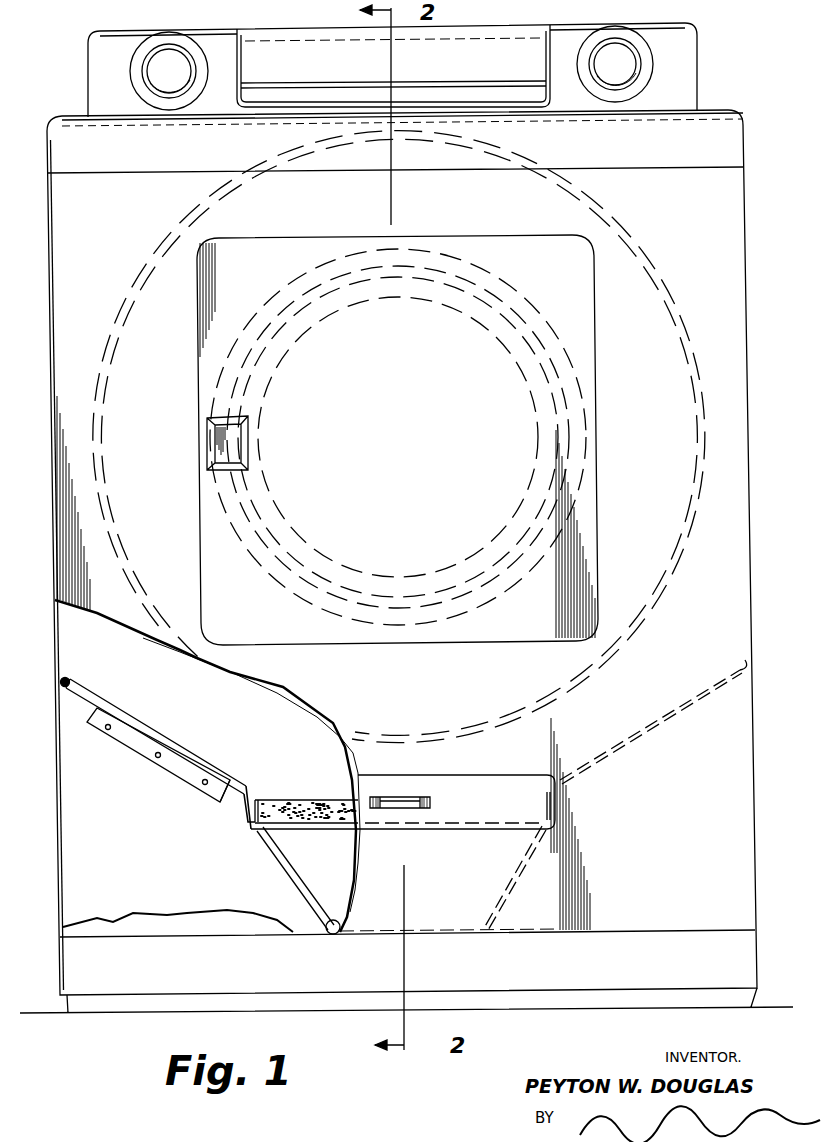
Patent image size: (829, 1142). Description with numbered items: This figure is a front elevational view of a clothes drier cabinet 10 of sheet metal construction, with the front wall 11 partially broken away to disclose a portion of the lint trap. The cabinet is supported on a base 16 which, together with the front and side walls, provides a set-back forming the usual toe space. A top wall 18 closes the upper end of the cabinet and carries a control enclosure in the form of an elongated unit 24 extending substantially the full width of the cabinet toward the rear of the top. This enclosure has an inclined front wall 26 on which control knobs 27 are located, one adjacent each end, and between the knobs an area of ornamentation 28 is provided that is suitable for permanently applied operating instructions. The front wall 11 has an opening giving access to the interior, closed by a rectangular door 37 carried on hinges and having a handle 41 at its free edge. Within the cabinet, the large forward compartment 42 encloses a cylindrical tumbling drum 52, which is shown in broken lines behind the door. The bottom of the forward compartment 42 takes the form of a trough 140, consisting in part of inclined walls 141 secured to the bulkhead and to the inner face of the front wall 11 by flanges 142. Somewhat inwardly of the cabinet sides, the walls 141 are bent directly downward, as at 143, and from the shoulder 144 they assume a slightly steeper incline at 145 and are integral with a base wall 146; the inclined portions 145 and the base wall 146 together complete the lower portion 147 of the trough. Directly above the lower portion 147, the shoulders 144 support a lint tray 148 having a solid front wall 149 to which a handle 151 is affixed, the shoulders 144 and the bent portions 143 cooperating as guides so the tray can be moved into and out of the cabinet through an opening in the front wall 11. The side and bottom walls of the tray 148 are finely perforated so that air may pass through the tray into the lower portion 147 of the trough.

The cabinet 10 is at (748, 431).
The front wall 11 is at (65, 385).
The base 16 is at (65, 1003).
The top wall 18 is at (67, 115).
The control enclosure unit 24 is at (698, 73).
The inclined front wall 26 is at (98, 48).
The control knobs 27 is at (600, 97).
The ornamentation 28 is at (268, 95).
The door 37 is at (212, 553).
The handle 41 is at (210, 456).
The forward compartment 42 is at (68, 633).
The tumbling drum 52 is at (185, 665).
The trough 140 is at (220, 800).
The inclined walls 141 is at (150, 727).
The flanges 142 is at (148, 755).
The downwardly bent portions 143 is at (248, 825).
The shoulders 144 is at (252, 820).
The steeper inclined portions 145 is at (287, 870).
The base wall 146 is at (320, 882).
The lower portion of trough 147 is at (290, 930).
The lint tray 148 is at (305, 805).
The front wall of tray 149 is at (498, 787).
The handle 151 is at (417, 795).